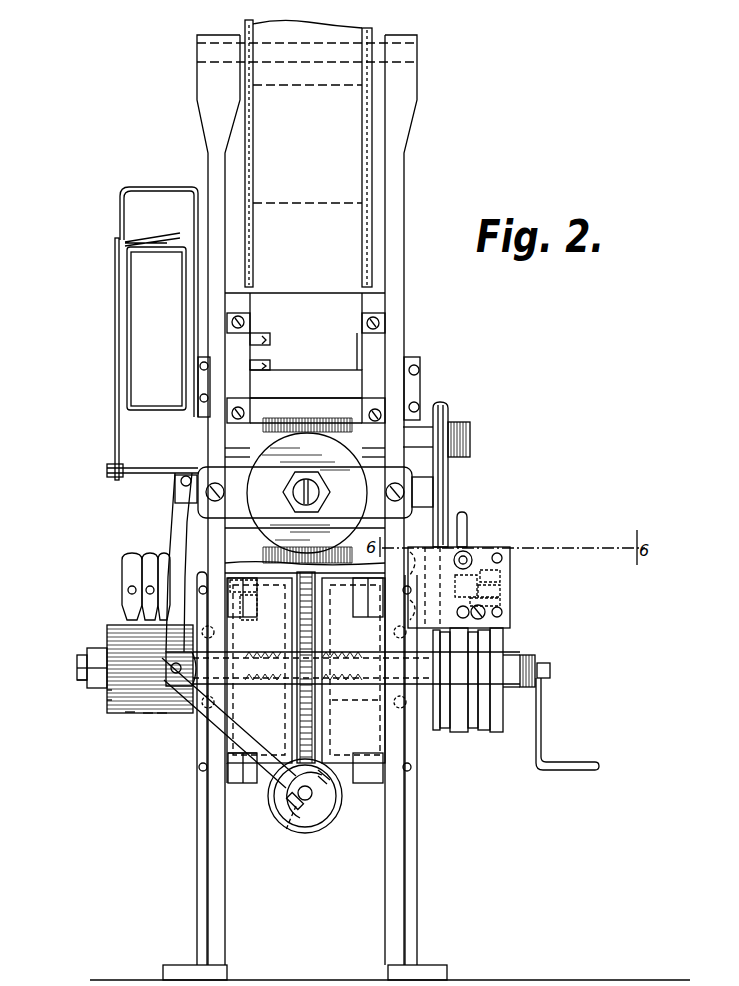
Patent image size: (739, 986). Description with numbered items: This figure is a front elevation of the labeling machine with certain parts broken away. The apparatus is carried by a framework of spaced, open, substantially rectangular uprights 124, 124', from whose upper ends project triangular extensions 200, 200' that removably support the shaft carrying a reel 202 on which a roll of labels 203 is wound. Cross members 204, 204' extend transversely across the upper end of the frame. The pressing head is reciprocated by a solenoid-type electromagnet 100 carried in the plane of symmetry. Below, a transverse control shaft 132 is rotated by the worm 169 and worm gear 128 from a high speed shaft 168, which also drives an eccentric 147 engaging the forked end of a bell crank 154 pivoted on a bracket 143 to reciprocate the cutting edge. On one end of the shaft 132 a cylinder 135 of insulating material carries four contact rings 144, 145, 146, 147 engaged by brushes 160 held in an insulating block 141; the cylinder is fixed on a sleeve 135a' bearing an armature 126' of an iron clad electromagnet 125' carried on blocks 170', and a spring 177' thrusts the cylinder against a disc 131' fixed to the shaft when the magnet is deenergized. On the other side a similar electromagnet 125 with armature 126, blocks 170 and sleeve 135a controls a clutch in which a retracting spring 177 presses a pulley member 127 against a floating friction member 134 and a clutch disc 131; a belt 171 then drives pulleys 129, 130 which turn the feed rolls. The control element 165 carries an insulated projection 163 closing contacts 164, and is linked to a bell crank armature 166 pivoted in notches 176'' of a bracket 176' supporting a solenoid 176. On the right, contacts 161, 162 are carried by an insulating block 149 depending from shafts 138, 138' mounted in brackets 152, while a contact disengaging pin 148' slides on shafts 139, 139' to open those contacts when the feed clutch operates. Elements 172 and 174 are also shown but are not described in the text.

The electromagnet 100 is at (330, 440).
The upright 124 is at (446, 770).
The upright 124' is at (177, 768).
The iron clad electromagnet 125 is at (422, 696).
The iron clad electromagnet 125' is at (189, 801).
The armature 126 is at (452, 707).
The armature 126' is at (198, 787).
The pulley member 127 is at (460, 732).
The worm gear 128 is at (336, 780).
The drive pulley 129 is at (449, 412).
The drive pulley 130 is at (462, 513).
The clutch disc member 131 is at (548, 737).
The disc 131' is at (73, 692).
The control shaft 132 is at (550, 672).
The intermediate freely floating member 134 is at (484, 697).
The cylinder 135 is at (112, 700).
The sleeve 135a is at (444, 690).
The sleeve 135a' is at (75, 707).
The shaft 138 is at (508, 574).
The shaft 138' is at (508, 525).
The shaft 139 is at (553, 619).
The shaft 139' is at (552, 638).
The block of insulating material 141 is at (122, 572).
The bracket 143 is at (168, 664).
The contact ring 144 is at (130, 712).
The contact ring 145 is at (162, 716).
The contact ring 146 is at (148, 714).
The contact ring 147 is at (292, 818).
The contact disengaging pin 148' is at (523, 597).
The block of insulating material 149 is at (503, 567).
The bracket 152 is at (500, 555).
The bell crank 154 is at (196, 762).
The contact brush 160 is at (132, 577).
The contact 161 is at (500, 587).
The contact 162 is at (500, 606).
The electrically insulated projection 163 is at (258, 340).
The electrical contacts 164 is at (258, 362).
The control element 165 is at (140, 474).
The bell crank armature 166 is at (114, 425).
The high speed shaft 168 is at (308, 795).
The worm 169 is at (315, 830).
The block 170 is at (398, 709).
The block 170' is at (185, 825).
The belt 171 is at (442, 485).
The disc 172 is at (473, 730).
The screw 174 is at (470, 628).
The electromagnet 176 is at (123, 328).
The bracket 176' is at (133, 302).
The notches 176'' is at (123, 232).
The retracting spring 177 is at (351, 670).
The spring 177' is at (259, 680).
The triangular extension 200 is at (329, 500).
The triangular extension 200' is at (185, 500).
The reel 202 is at (370, 142).
The roll of labels 203 is at (333, 113).
The cross member 204 is at (442, 366).
The cross member 204' is at (135, 385).